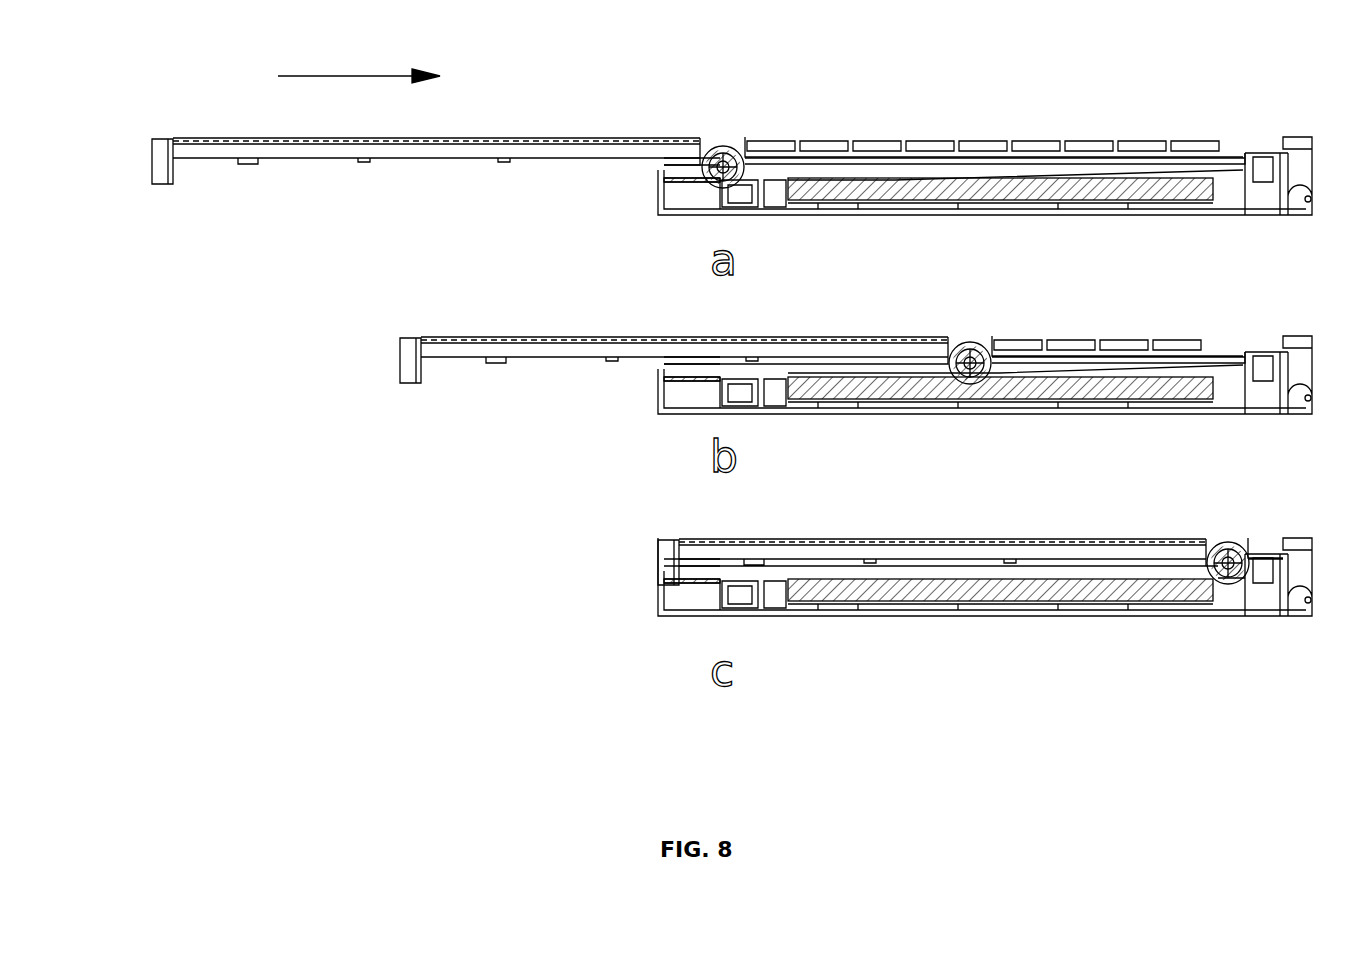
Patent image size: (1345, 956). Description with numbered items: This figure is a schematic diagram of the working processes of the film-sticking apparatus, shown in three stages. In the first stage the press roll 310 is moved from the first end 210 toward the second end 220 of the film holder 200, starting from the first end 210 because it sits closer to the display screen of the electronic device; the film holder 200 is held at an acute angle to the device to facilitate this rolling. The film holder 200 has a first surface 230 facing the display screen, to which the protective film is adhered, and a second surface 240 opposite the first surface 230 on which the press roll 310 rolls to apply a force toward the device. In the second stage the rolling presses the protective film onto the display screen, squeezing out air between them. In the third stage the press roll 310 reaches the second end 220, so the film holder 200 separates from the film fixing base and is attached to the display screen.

The film holder 200 is at (985, 125).
The first end 210 is at (994, 104).
The second end 220 is at (1016, 104).
The first surface 230 is at (1000, 232).
The second surface 240 is at (1015, 114).
The press roll 310 is at (753, 131).